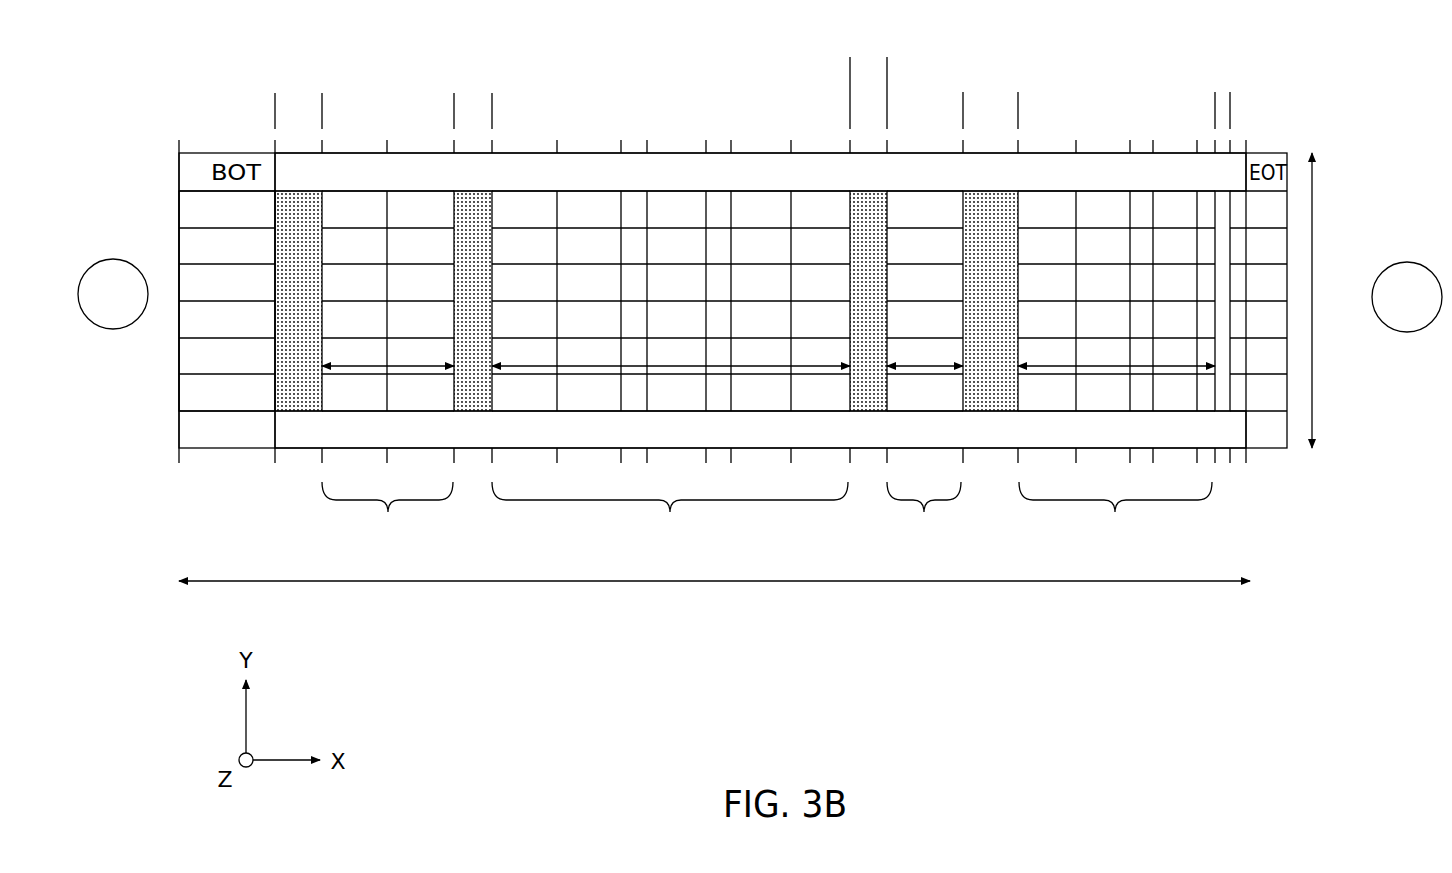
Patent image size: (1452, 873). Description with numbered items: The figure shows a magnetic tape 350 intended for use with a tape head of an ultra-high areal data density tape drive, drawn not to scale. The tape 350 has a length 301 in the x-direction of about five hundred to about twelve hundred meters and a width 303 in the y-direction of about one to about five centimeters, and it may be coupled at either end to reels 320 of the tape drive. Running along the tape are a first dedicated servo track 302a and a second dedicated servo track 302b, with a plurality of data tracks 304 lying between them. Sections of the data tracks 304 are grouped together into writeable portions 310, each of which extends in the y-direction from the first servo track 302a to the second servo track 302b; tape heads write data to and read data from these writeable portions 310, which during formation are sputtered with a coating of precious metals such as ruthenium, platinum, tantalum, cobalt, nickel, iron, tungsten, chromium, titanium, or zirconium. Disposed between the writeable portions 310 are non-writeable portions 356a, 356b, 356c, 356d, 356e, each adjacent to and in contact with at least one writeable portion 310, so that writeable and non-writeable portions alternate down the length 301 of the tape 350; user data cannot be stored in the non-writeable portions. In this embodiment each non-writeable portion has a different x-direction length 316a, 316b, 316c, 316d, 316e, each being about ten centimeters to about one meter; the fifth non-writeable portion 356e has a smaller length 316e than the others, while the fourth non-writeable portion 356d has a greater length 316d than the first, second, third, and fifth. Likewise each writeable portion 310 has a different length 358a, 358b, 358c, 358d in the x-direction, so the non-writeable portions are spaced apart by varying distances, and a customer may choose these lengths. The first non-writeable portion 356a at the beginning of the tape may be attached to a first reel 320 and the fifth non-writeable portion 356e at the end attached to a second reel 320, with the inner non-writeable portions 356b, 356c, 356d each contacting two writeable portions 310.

The magnetic tape 350 is at (142, 125).
The length 301 is at (714, 598).
The width 303 is at (1336, 300).
The first dedicated servo track 302a is at (760, 172).
The second dedicated servo track 302b is at (760, 429).
The data tracks 304 is at (227, 301).
The writeable portion 310 is at (767, 512).
The length of first non-writeable portion 316a is at (232, 104).
The length of second non-writeable portion 316b is at (537, 104).
The length of third non-writeable portion 316c is at (932, 68).
The length of fourth non-writeable portion 316d is at (1063, 104).
The length of fifth non-writeable portion 316e is at (1170, 104).
The reel 320 is at (760, 295).
The first non-writeable portion 356a is at (298, 301).
The second non-writeable portion 356b is at (473, 301).
The third non-writeable portion 356c is at (868, 301).
The fourth non-writeable portion 356d is at (990, 301).
The fifth non-writeable portion 356e is at (1223, 243).
The length of first writeable portion 358a is at (388, 353).
The length of second writeable portion 358b is at (671, 353).
The length of third writeable portion 358c is at (925, 353).
The length of fourth writeable portion 358d is at (1116, 353).